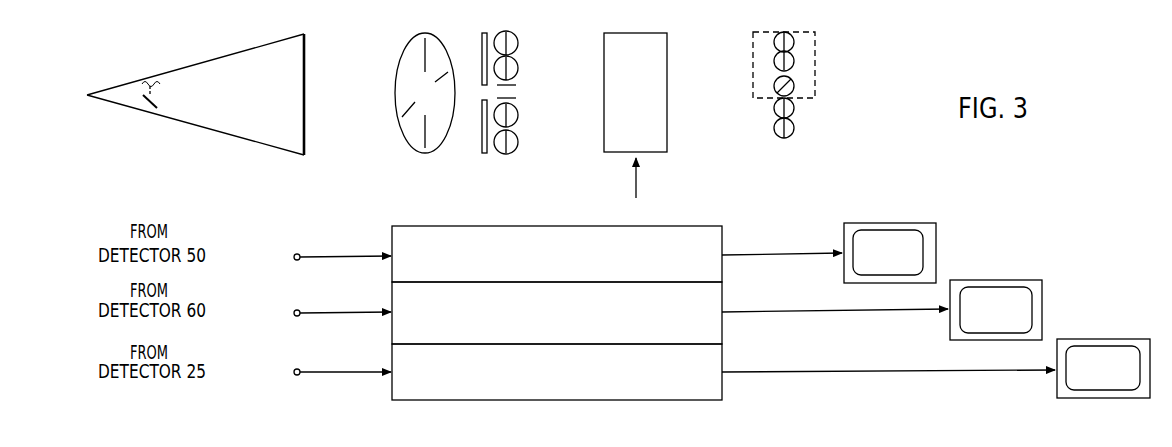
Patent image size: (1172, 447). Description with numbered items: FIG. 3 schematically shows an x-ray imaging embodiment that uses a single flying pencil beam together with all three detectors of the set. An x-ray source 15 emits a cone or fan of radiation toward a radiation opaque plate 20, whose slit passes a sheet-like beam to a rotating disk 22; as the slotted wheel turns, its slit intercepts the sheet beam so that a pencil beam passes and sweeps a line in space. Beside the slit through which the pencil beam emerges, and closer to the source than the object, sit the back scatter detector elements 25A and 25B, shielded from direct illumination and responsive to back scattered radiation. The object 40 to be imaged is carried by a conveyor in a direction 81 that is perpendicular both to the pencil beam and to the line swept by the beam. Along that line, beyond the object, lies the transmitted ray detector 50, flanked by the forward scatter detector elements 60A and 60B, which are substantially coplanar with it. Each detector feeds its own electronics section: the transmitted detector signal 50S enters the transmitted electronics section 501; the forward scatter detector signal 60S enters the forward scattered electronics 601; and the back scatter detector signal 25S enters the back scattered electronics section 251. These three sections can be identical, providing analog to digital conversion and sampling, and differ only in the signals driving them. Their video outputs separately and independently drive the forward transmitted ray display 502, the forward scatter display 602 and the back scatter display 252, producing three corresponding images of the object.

The x-ray source 15 is at (222, 55).
The radiation opaque plate 20 is at (307, 44).
The rotating disk 22 is at (407, 45).
The back scatter detector element 25A is at (517, 56).
The back scatter detector element 25B is at (517, 139).
The object 40 is at (628, 31).
The direction of motion 81 is at (639, 184).
The transmitted ray detector 50 is at (797, 90).
The forward scatter detector element 60A is at (796, 58).
The forward scatter detector element 60B is at (796, 128).
The signal from detector 50 50S is at (320, 255).
The signal from detector 60 60S is at (320, 310).
The signal from detector 25 25S is at (320, 371).
The transmitted electronics section 501 is at (502, 223).
The forward scattered electronics 601 is at (725, 335).
The back scattered electronics section 251 is at (505, 401).
The forward transmitted ray display 502 is at (886, 223).
The forward scatter display 602 is at (991, 280).
The back scatter display 252 is at (1096, 339).